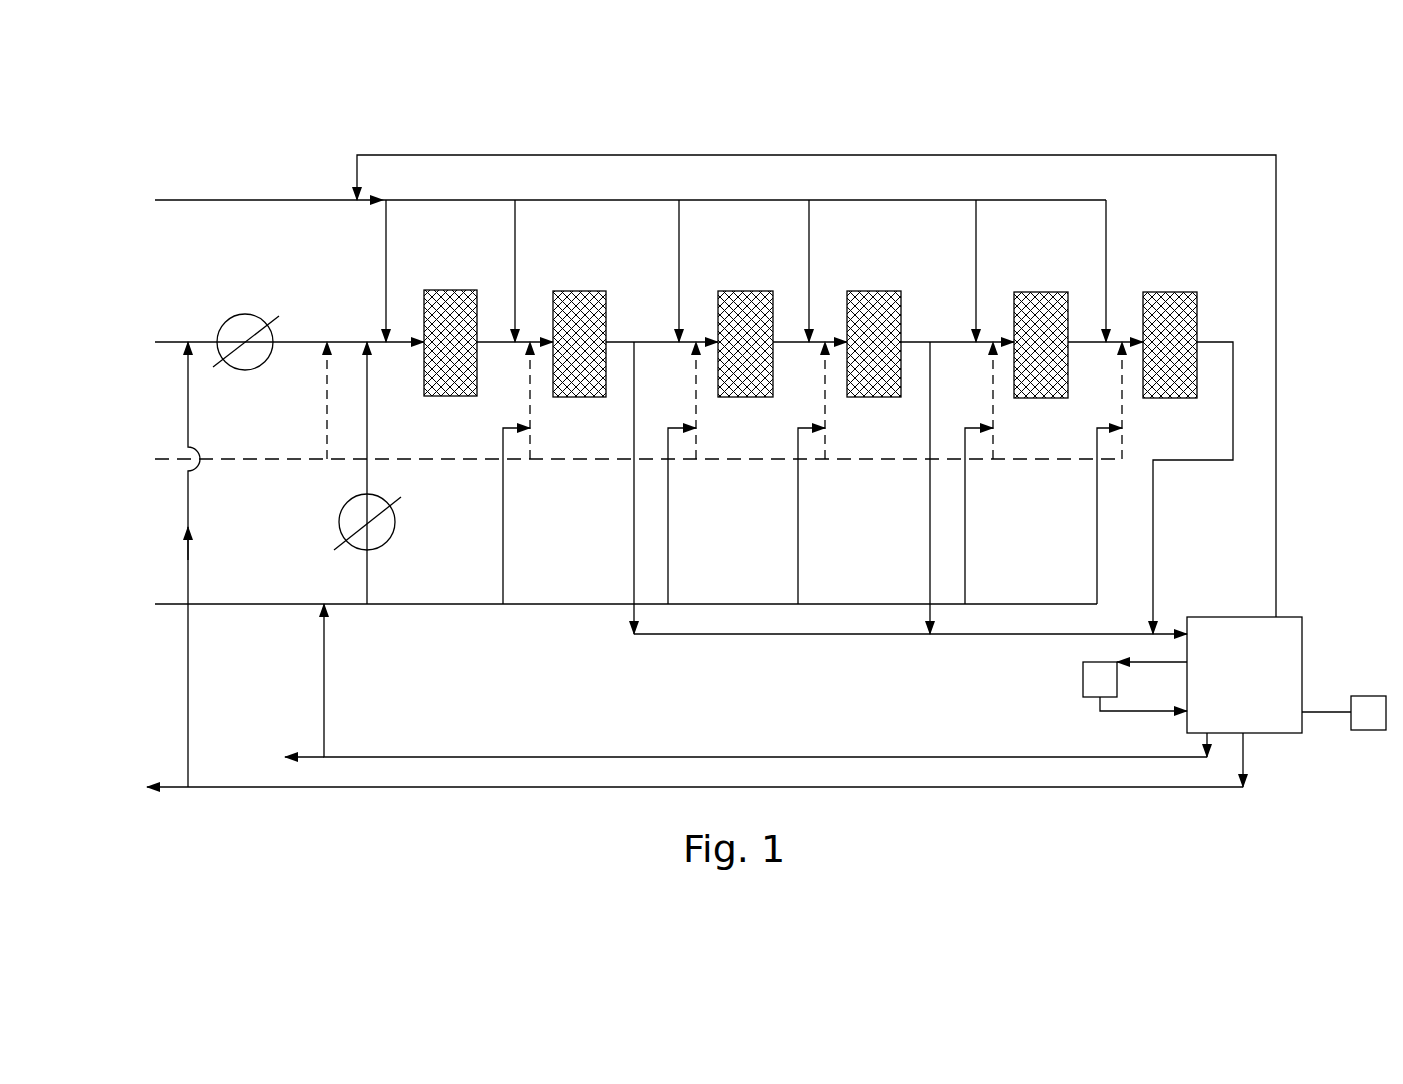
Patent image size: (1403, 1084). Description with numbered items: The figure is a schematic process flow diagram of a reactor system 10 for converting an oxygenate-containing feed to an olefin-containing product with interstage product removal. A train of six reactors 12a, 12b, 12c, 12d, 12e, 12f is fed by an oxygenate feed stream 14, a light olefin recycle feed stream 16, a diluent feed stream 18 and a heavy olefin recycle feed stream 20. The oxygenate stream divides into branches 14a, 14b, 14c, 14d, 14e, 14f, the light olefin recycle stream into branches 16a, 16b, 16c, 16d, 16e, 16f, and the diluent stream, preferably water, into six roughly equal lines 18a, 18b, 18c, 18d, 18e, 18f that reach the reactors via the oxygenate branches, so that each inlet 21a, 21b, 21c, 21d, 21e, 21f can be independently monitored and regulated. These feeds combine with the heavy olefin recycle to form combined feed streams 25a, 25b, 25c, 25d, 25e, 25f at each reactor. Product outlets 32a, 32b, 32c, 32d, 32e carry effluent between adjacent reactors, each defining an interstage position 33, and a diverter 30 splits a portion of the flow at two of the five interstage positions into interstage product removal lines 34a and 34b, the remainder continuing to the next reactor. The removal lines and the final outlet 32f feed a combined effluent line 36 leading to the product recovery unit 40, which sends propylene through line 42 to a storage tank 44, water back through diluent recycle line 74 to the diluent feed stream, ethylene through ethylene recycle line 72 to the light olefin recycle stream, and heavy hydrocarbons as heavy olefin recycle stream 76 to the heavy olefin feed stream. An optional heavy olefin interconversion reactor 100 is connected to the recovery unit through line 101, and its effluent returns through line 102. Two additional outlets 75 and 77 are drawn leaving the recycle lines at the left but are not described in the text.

The reactor system 10 is at (946, 142).
The reactor 12a is at (454, 288).
The reactor 12b is at (586, 290).
The reactor 12c is at (752, 290).
The reactor 12d is at (881, 290).
The reactor 12e is at (1048, 290).
The reactor 12f is at (1176, 290).
The oxygenate feed stream 14 is at (172, 468).
The oxygenate feed branch 14a is at (326, 398).
The oxygenate feed branch 14b is at (536, 418).
The oxygenate feed branch 14c is at (702, 418).
The oxygenate feed branch 14d is at (831, 418).
The oxygenate feed branch 14e is at (999, 418).
The oxygenate feed branch 14f is at (1128, 418).
The light olefin recycle feed stream 16 is at (215, 198).
The light olefin recycle branch 16a is at (386, 242).
The light olefin recycle branch 16b is at (515, 250).
The light olefin recycle branch 16c is at (679, 250).
The light olefin recycle branch 16d is at (809, 250).
The light olefin recycle branch 16e is at (976, 250).
The light olefin recycle branch 16f is at (1106, 250).
The diluent feed stream 18 is at (174, 606).
The diluent branch line 18a is at (367, 576).
The diluent branch line 18b is at (504, 536).
The diluent branch line 18c is at (668, 544).
The diluent branch line 18d is at (798, 544).
The diluent branch line 18e is at (965, 544).
The diluent branch line 18f is at (1097, 559).
The heavy olefin recycle feed stream 20 is at (190, 340).
The reactor inlet 21a is at (414, 333).
The reactor inlet 21b is at (542, 333).
The reactor inlet 21c is at (707, 333).
The reactor inlet 21d is at (837, 333).
The reactor inlet 21e is at (1002, 333).
The reactor inlet 21f is at (1132, 333).
The combined feed stream branch 25a is at (406, 347).
The combined feed stream branch 25b is at (538, 384).
The combined feed stream branch 25c is at (696, 355).
The combined feed stream branch 25d is at (828, 382).
The combined feed stream branch 25e is at (992, 360).
The combined feed stream branch 25f is at (1124, 382).
The diverter 30 is at (708, 650).
The product outlet 32a is at (494, 345).
The product outlet 32b is at (627, 336).
The product outlet 32c is at (794, 345).
The product outlet 32d is at (922, 336).
The product outlet 32e is at (1092, 345).
The product outlet 32f is at (1215, 336).
The interstage position 33 is at (651, 336).
The interstage product removal line 34a is at (632, 422).
The interstage product removal line 34b is at (930, 428).
The combined effluent line 36 is at (800, 635).
The product recovery unit 40 is at (1302, 643).
The propylene line 42 is at (1326, 712).
The storage tank 44 is at (1368, 696).
The ethylene recycle line 72 is at (462, 155).
The diluent recycle line 74 is at (324, 653).
The liquid recycle outlet 75 is at (317, 756).
The heavy olefin recycle stream 76 is at (188, 659).
The bottoms outlet 77 is at (172, 782).
The heavy olefin interconversion reactor 100 is at (1083, 680).
The line 101 is at (1150, 662).
The line 102 is at (1136, 714).